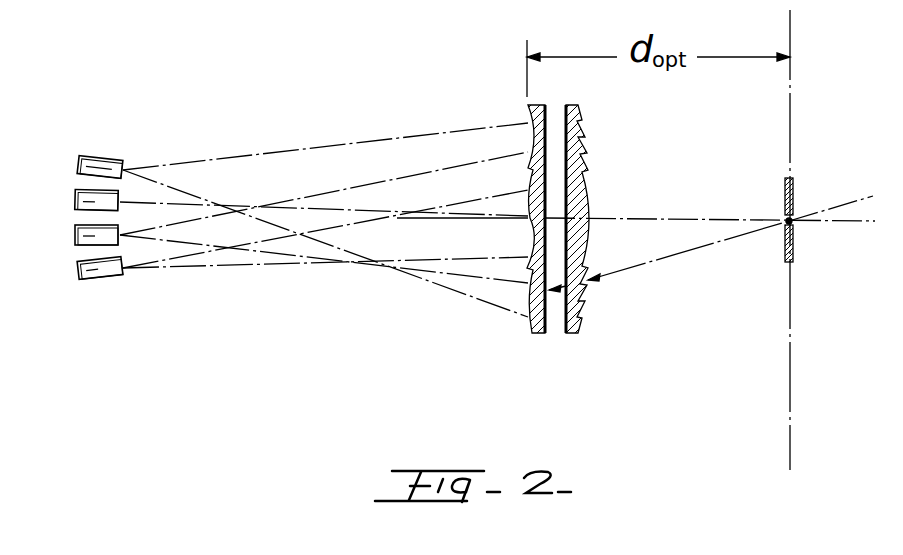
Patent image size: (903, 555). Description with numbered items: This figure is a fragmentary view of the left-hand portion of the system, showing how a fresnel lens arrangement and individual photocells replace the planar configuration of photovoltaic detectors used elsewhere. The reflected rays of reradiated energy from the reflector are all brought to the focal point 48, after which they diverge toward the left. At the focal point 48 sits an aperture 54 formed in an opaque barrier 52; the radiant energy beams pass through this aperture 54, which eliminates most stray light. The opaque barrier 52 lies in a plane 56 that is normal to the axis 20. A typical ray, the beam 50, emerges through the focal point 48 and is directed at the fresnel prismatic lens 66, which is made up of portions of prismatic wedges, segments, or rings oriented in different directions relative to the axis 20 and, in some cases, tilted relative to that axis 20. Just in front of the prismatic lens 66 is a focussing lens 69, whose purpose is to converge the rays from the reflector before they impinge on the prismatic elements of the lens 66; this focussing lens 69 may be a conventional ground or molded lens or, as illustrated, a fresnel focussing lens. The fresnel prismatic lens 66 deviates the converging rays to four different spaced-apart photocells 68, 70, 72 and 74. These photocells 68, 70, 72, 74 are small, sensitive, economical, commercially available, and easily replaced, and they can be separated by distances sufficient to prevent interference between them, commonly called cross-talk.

The axis 20 is at (700, 220).
The focal point 48 is at (793, 225).
The beam 50 is at (700, 250).
The opaque barrier 52 is at (793, 193).
The aperture 54 is at (784, 217).
The plane of the opaque barrier 56 is at (792, 33).
The fresnel prismatic lens 66 is at (540, 335).
The photocell 68 is at (98, 155).
The focussing lens 69 is at (580, 323).
The photocell 70 is at (77, 200).
The photocell 72 is at (75, 235).
The photocell 74 is at (77, 272).